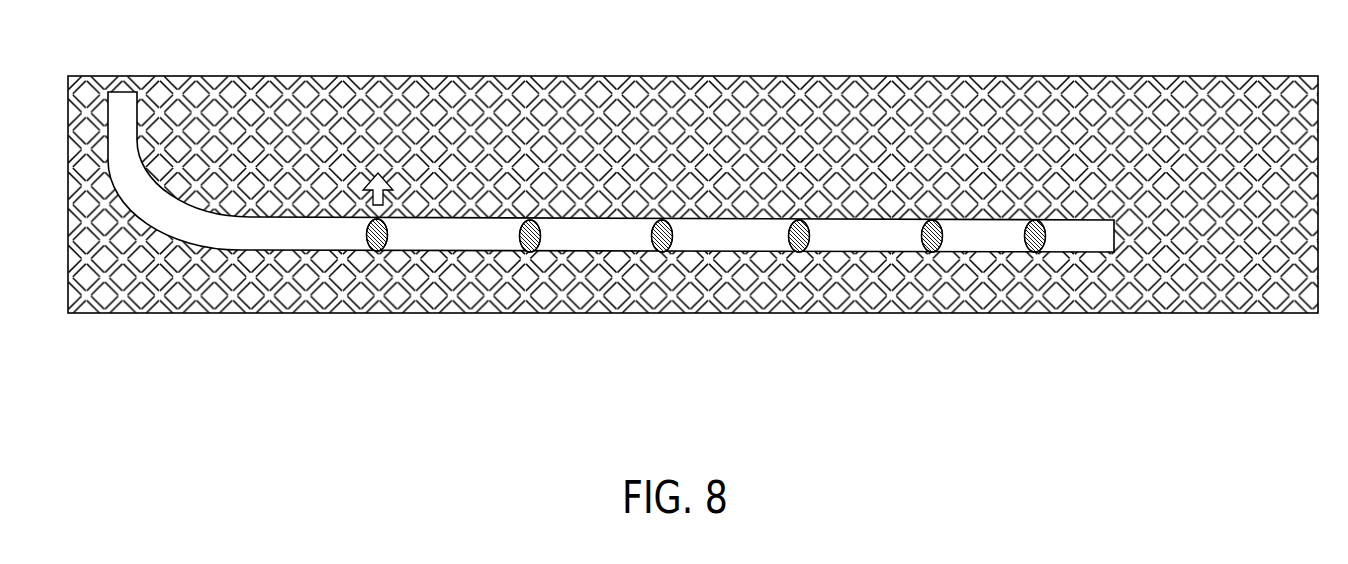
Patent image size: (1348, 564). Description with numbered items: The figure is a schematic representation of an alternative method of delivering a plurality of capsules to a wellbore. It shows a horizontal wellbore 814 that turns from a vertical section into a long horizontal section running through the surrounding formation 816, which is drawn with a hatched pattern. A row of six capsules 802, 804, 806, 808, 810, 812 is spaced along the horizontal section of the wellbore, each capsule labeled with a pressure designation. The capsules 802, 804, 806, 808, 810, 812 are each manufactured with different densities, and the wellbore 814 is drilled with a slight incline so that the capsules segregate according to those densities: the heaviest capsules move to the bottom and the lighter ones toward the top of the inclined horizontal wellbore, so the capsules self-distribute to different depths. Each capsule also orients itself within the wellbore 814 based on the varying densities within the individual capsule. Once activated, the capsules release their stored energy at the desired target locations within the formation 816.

The capsule 802 is at (377, 251).
The capsule 804 is at (530, 252).
The capsule 806 is at (662, 252).
The capsule 808 is at (799, 252).
The capsule 810 is at (932, 252).
The capsule 812 is at (1035, 252).
The horizontal wellbore 814 is at (112, 90).
The formation 816 is at (129, 348).